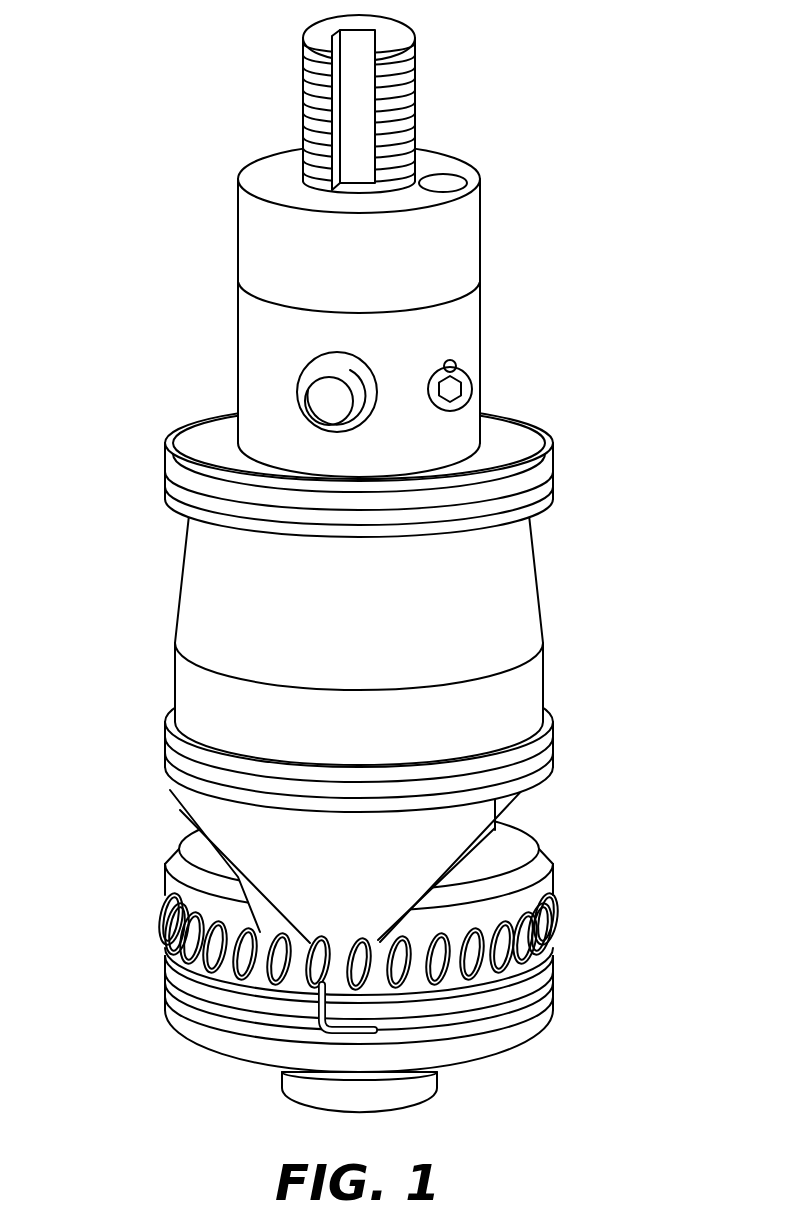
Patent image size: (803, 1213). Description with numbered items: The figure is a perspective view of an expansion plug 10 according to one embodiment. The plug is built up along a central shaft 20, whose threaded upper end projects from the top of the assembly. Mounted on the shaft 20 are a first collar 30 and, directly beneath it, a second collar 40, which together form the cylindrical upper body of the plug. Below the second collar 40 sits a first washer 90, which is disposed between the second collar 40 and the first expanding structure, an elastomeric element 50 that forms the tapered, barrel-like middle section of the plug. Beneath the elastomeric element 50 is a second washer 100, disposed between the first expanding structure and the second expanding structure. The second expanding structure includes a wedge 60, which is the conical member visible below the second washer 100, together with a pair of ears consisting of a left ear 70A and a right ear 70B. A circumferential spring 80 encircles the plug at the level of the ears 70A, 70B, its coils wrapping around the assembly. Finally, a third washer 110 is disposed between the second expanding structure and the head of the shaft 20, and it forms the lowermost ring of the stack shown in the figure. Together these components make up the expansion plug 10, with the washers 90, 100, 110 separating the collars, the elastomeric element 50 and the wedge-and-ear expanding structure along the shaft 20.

The expansion plug 10 is at (128, 130).
The shaft 20 is at (305, 76).
The first collar 30 is at (470, 239).
The second collar 40 is at (238, 360).
The first expanding structure/elastomeric element 50 is at (187, 553).
The wedge 60 is at (182, 812).
The left ear 70A is at (167, 870).
The right ear 70B is at (553, 855).
The circumferential spring 80 is at (165, 930).
The first washer 90 is at (520, 410).
The second washer 100 is at (555, 743).
The third washer 110 is at (555, 1005).